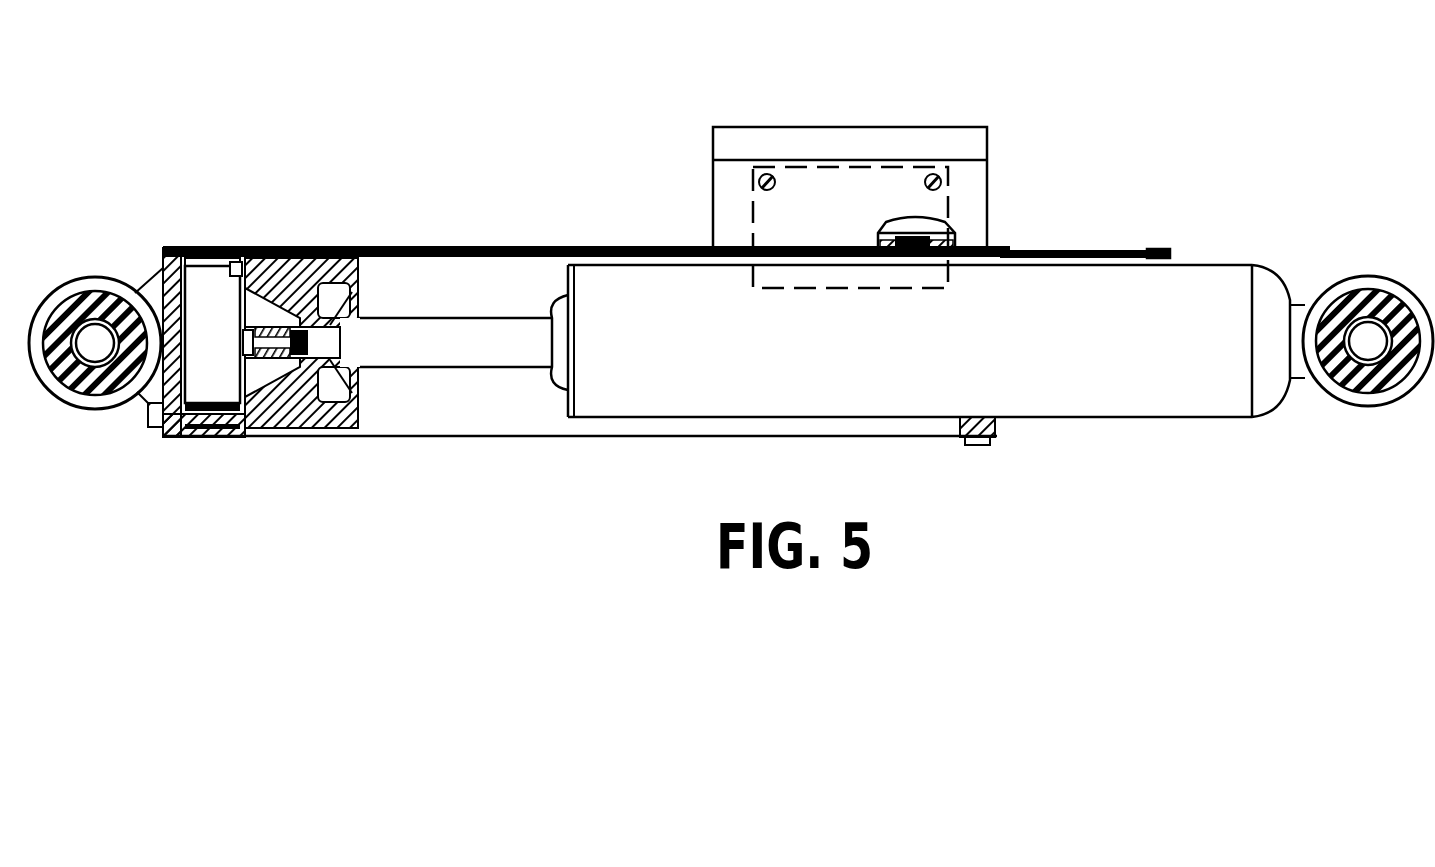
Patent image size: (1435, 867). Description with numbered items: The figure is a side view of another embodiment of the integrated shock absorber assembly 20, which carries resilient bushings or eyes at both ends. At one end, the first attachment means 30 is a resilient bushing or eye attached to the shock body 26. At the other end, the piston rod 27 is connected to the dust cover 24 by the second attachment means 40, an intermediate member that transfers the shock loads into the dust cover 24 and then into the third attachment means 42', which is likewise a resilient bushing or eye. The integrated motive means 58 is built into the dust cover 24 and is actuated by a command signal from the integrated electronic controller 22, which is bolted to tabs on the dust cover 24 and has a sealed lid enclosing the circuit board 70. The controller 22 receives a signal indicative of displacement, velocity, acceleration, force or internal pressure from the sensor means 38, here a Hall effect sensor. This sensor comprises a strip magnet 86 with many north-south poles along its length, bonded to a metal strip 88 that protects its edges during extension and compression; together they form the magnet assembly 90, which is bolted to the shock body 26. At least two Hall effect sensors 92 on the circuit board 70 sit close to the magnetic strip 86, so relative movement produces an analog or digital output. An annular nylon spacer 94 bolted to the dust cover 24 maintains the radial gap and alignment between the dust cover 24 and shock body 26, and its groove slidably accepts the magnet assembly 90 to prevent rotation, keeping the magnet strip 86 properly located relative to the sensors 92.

The integrated shock absorber assembly 20 is at (623, 137).
The integrated electronic controller 22 is at (923, 76).
The dust cover 24 is at (400, 437).
The shock body 26 is at (1118, 418).
The piston rod 27 is at (500, 342).
The first attachment means 30 is at (1372, 446).
The sensor means 38 is at (1021, 205).
The second attachment means 40 is at (290, 405).
The third attachment means 42' is at (96, 405).
The integrated motive means 58 is at (210, 312).
The circuit board 70 is at (905, 215).
The strip magnet 86 is at (1058, 255).
The metal strip 88 is at (1180, 292).
The magnet assembly 90 is at (1169, 193).
The Hall effect sensors 92 is at (950, 195).
The annular nylon spacer 94 is at (997, 435).